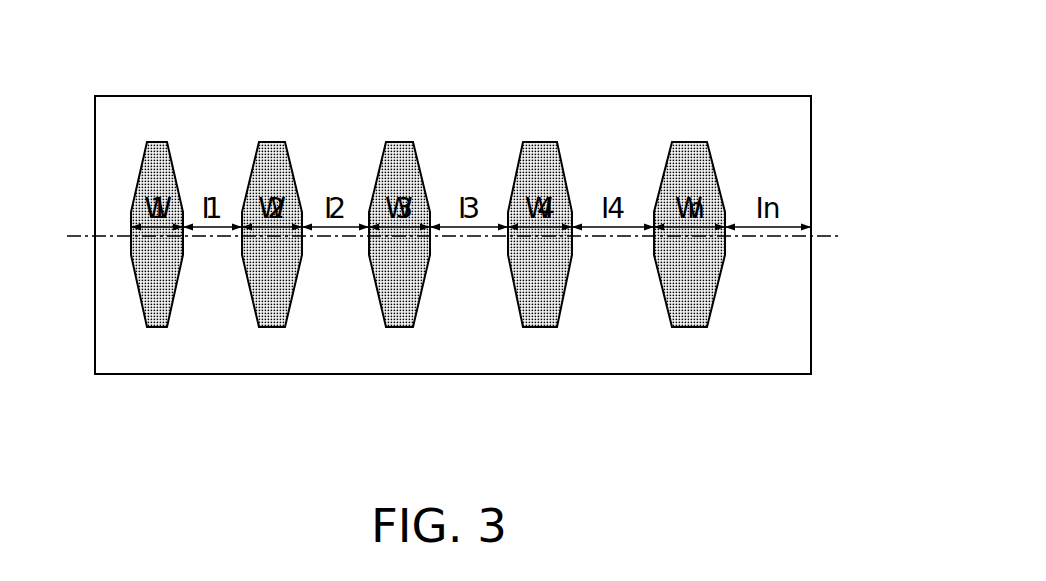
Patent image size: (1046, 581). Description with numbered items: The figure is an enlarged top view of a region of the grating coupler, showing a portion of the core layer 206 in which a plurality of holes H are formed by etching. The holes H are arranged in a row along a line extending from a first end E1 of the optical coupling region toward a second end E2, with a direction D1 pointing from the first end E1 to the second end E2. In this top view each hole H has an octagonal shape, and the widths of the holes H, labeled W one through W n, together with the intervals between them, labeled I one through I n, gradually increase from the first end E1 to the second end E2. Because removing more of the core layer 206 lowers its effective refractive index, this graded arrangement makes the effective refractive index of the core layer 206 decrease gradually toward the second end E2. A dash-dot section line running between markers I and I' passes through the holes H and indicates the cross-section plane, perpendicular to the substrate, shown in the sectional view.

The core layer 206 is at (620, 123).
The holes H is at (520, 297).
The first end E1 is at (69, 115).
The second end E2 is at (747, 25).
The direction D1 is at (900, 24).
The section line I is at (73, 277).
The section line I' is at (836, 277).